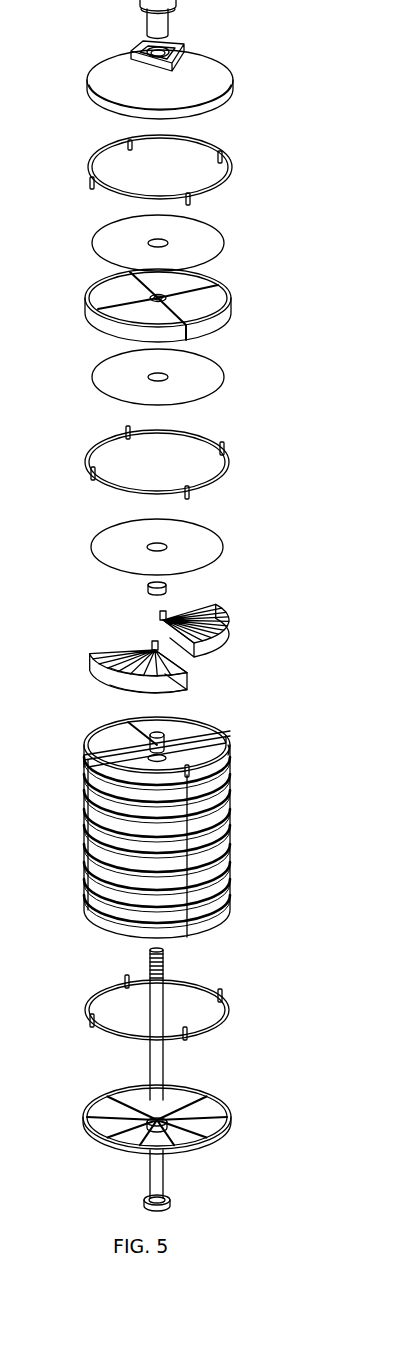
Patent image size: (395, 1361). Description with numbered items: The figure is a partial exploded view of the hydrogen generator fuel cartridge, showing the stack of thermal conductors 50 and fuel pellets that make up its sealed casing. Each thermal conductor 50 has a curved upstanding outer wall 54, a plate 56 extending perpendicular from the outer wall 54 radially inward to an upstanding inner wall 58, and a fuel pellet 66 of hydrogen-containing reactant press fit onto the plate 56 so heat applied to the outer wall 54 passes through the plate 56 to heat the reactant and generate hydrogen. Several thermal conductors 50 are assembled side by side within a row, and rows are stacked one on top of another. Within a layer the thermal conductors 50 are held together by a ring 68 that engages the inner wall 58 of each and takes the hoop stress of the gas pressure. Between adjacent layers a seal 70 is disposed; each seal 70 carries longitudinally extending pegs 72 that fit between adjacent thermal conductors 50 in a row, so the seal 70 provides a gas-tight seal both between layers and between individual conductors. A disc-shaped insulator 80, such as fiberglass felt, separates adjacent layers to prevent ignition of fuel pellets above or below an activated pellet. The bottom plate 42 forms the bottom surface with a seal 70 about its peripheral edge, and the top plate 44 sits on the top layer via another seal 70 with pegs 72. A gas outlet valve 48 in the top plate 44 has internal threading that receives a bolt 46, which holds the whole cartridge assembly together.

The bottom plate 42 is at (228, 1115).
The top plate 44 is at (222, 74).
The bolt 46 is at (153, 1178).
The gas outlet valve 48 is at (164, 23).
The thermal conductor 50 is at (228, 326).
The outer wall 54 is at (187, 688).
The plate 56 is at (205, 605).
The inner wall 58 is at (152, 640).
The fuel pellet 66 is at (205, 283).
The ring 68 is at (147, 586).
The seal 70 is at (95, 154).
The peg 72 is at (218, 158).
The insulator 80 is at (105, 238).